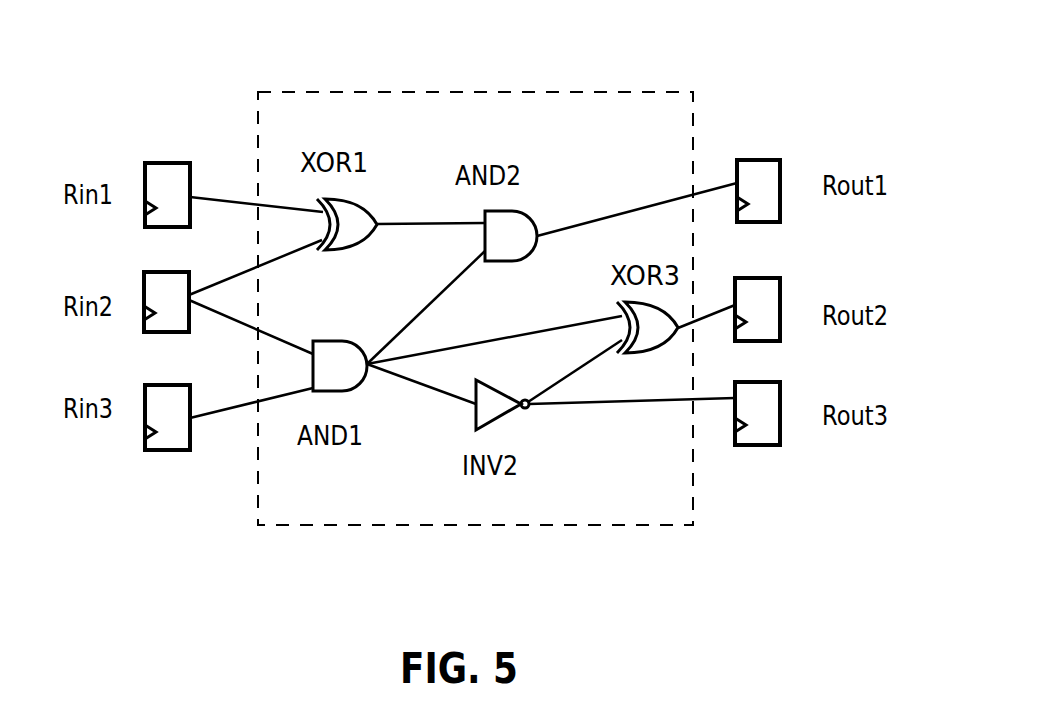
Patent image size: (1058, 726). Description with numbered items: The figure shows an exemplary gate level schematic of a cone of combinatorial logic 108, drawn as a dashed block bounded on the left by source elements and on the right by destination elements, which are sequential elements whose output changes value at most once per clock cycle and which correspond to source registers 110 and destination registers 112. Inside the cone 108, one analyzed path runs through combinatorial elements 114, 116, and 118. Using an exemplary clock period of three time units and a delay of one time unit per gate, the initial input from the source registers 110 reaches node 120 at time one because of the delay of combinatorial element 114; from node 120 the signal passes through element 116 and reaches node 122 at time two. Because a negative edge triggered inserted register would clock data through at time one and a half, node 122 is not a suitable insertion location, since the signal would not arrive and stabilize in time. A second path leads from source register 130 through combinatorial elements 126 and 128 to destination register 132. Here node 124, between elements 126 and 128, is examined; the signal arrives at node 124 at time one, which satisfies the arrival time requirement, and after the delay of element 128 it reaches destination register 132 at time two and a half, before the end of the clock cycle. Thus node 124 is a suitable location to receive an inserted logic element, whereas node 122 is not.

The cone of combinatorial logic 108 is at (650, 91).
The source register 110 is at (146, 318).
The destination register 112 is at (781, 321).
The combinatorial element 114 is at (340, 392).
The combinatorial element 116 is at (488, 380).
The combinatorial element 118 is at (673, 346).
The node 120 is at (412, 382).
The node 122 is at (592, 362).
The node 124 is at (430, 223).
The combinatorial element 126 is at (345, 199).
The combinatorial element 128 is at (526, 212).
The source register 130 is at (147, 212).
The destination register 132 is at (780, 205).